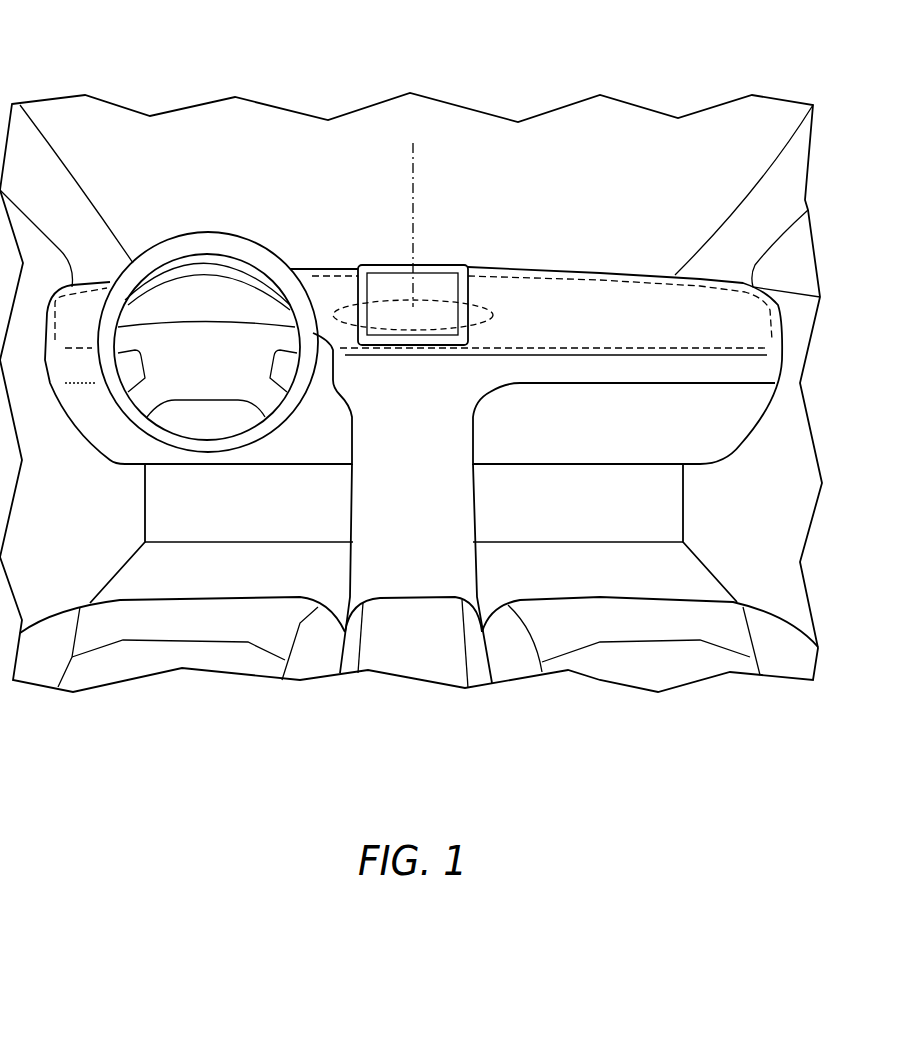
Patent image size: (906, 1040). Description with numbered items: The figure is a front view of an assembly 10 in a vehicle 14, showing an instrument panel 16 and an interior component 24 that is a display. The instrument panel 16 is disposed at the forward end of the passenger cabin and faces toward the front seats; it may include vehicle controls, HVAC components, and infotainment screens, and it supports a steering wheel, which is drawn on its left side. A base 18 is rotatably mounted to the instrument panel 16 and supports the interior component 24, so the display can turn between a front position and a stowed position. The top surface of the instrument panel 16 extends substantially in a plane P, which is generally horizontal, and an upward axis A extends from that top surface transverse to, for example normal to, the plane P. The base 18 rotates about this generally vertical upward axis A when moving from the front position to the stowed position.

The vehicle 14 is at (146, 84).
The assembly 10 is at (492, 233).
The instrument panel 16 is at (563, 297).
The base 18 is at (343, 297).
The interior component 24 is at (387, 283).
The upward axis A is at (412, 211).
The plane P is at (637, 283).